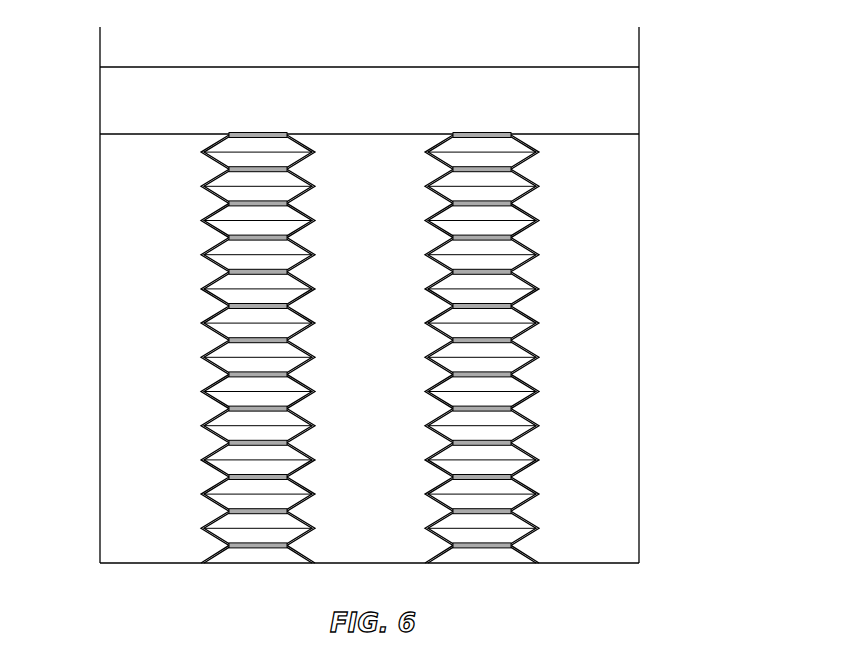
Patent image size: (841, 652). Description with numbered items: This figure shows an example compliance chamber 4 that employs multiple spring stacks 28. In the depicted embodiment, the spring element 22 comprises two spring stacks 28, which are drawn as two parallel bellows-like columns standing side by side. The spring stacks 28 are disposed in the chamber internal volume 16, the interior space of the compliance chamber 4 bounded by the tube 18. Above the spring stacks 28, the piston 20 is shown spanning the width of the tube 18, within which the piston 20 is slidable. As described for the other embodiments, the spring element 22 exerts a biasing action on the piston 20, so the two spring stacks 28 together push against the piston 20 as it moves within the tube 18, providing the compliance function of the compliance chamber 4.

The compliance chamber 4 is at (384, 284).
The chamber internal volume 16 is at (606, 343).
The tube 18 is at (99, 350).
The piston 20 is at (372, 67).
The spring element 22 is at (317, 348).
The spring stacks 28 is at (314, 495).